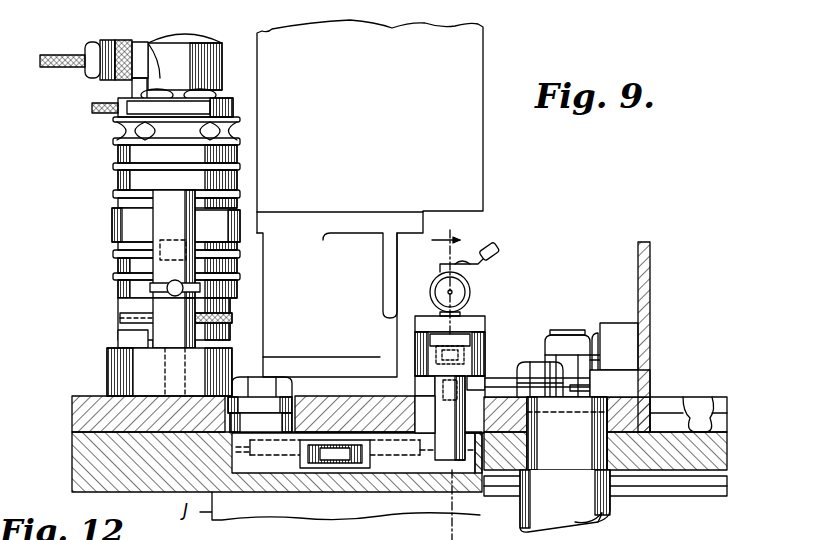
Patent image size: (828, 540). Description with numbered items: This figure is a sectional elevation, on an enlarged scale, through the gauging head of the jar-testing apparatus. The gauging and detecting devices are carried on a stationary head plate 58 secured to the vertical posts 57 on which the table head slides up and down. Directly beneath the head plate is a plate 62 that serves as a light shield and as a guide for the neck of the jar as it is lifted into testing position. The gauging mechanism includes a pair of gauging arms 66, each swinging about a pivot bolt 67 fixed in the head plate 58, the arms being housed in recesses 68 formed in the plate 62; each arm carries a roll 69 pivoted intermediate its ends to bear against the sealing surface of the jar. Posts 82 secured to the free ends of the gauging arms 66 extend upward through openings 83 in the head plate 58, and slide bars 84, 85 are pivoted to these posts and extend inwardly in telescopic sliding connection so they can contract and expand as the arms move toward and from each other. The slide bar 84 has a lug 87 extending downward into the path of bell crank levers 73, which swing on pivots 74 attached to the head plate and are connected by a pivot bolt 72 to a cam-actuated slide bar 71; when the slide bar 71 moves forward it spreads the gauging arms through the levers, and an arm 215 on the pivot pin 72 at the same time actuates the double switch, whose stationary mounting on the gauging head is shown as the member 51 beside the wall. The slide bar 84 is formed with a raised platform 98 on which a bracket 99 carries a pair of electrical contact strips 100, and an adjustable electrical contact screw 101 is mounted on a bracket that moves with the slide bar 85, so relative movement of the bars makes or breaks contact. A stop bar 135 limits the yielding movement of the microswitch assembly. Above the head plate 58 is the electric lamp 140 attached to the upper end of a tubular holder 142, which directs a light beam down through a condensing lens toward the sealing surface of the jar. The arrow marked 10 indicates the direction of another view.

The electric lamp 140 is at (200, 53).
The tubular holder 142 is at (135, 178).
The head plate 58 is at (92, 396).
The plate 62 is at (90, 454).
The pivot bolt 67 is at (268, 378).
The roll 69 is at (352, 460).
The gauging arm 66 is at (400, 443).
The recess 68 is at (466, 481).
The post 82 is at (437, 400).
The opening 83 is at (432, 426).
The slide bar 84 is at (440, 339).
The slide bar 85 is at (423, 357).
The lug 87 is at (425, 386).
The platform 98 is at (480, 331).
The bracket 99 is at (472, 321).
The electrical contact strip 100 is at (450, 271).
The electrical contact screw 101 is at (453, 291).
The viewing direction 10 is at (462, 243).
The bell crank lever 73 is at (495, 391).
The pivot 74 is at (536, 366).
The pivot bolt 72 is at (569, 336).
The arm 215 is at (593, 332).
The frame wall 51 is at (625, 332).
The slide bar 71 is at (670, 392).
The stop bar 135 is at (706, 396).
The vertical post 57 is at (598, 508).